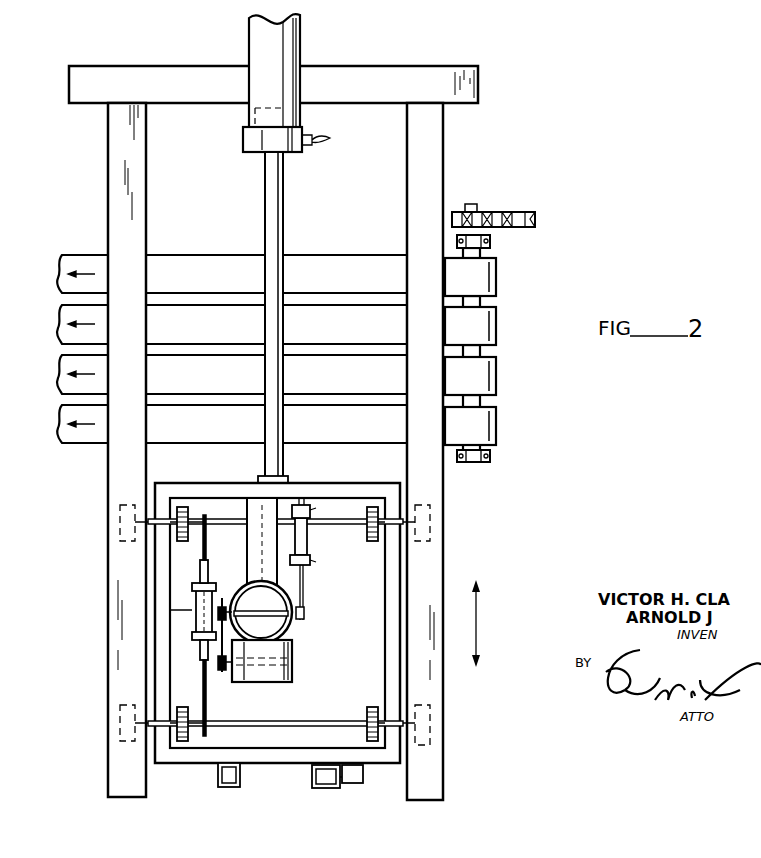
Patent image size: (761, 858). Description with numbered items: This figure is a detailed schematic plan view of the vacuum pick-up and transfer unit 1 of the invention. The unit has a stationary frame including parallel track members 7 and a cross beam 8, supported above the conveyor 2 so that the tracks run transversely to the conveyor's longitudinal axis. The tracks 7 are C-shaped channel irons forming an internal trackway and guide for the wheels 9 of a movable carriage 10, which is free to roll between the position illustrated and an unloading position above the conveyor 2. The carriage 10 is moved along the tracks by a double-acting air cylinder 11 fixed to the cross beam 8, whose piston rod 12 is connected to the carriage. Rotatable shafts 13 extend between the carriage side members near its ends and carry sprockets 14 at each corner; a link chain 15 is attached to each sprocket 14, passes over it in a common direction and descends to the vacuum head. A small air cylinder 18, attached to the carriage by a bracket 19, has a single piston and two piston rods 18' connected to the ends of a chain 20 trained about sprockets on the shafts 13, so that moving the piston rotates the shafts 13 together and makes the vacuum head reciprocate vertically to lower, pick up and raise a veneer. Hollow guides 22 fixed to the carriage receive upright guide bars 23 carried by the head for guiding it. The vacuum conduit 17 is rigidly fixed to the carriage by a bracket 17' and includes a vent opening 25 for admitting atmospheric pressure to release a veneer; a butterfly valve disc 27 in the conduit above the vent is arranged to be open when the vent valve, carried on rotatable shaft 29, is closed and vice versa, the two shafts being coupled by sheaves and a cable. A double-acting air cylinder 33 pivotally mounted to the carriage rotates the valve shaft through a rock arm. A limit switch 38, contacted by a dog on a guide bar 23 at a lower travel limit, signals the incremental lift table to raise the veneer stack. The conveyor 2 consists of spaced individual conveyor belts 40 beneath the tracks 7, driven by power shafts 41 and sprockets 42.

The vacuum pick-up and transfer unit 1 is at (458, 548).
The conveyor 2 is at (72, 252).
The parallel track members 7 is at (150, 158).
The cross beam 8 is at (393, 72).
The wheels 9 is at (430, 712).
The movable carriage 10 is at (280, 770).
The double-acting air cylinder 11 is at (285, 56).
The piston rod 12 is at (263, 222).
The rotatable shafts 13 is at (340, 518).
The sprockets 14 is at (189, 536).
The link chains 15 is at (183, 507).
The vacuum conduit 17 is at (276, 635).
The bracket 17' is at (240, 523).
The small air cylinder 18 is at (190, 649).
The piston rods 18' is at (224, 625).
The bracket 19 is at (178, 610).
The chain 20 is at (208, 556).
The hollow guides 22 is at (236, 787).
The upright guide bars 23 is at (226, 786).
The vent opening 25 is at (292, 646).
The butterfly valve disc 27 is at (272, 607).
The rotatable shaft 29 is at (292, 661).
The double-acting air cylinder 33 is at (307, 544).
The limit switch 38 is at (355, 786).
The conveyor belts 40 is at (495, 320).
The power shafts 41 is at (480, 232).
The sprockets 42 is at (487, 212).